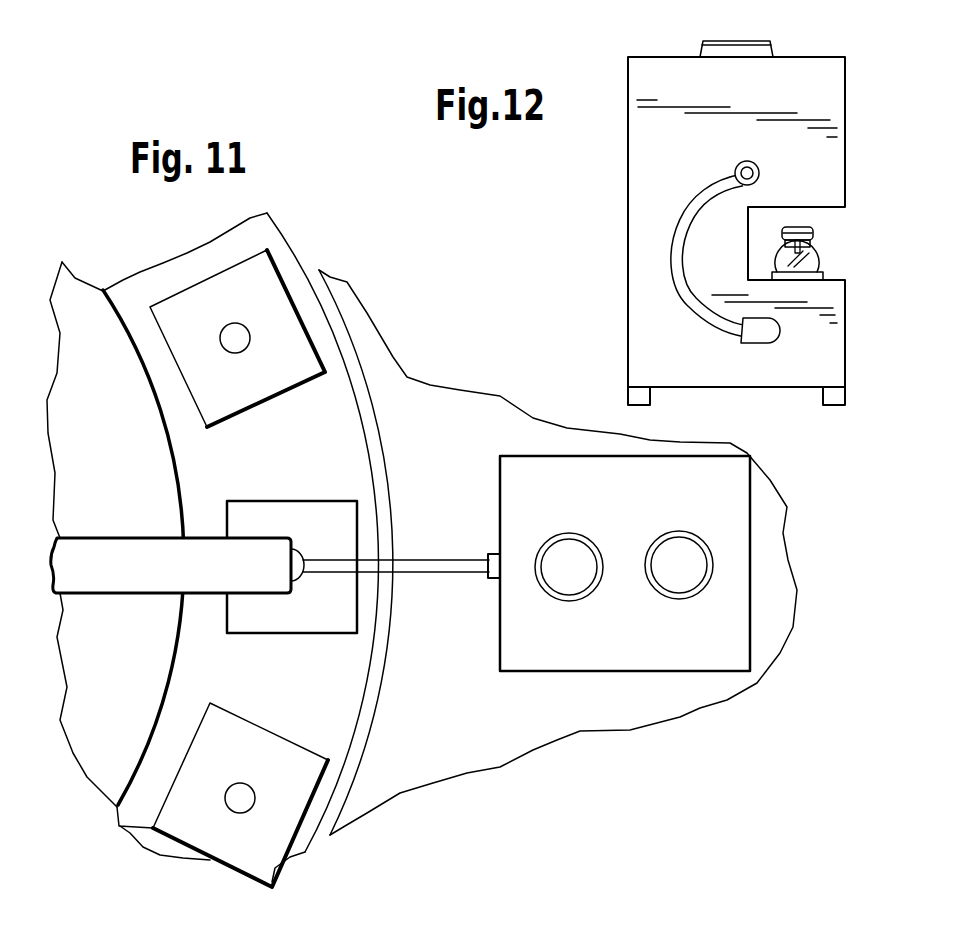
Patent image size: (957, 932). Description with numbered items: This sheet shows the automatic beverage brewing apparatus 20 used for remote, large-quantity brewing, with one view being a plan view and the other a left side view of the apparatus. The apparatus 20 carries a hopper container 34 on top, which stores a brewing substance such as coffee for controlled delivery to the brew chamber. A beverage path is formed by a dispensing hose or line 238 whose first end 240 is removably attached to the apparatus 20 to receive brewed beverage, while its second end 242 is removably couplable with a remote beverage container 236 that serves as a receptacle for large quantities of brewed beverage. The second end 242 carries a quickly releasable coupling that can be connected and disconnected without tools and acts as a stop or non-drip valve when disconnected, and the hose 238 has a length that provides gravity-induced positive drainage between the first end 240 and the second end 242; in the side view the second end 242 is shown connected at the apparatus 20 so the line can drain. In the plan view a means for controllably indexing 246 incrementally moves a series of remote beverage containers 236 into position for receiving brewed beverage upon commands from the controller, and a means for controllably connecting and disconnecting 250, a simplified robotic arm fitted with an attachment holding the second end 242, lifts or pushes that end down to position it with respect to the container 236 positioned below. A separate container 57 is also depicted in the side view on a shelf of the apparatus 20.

In FIG. 11, the automatic beverage brewing apparatus 20 is at (722, 700).
In FIG. 12, the automatic beverage brewing apparatus 20 is at (612, 67).
In FIG. 11, the hopper container 34 is at (547, 534).
In FIG. 12, the hopper container 34 is at (700, 56).
In FIG. 12, the cleaning solution container 57 is at (820, 256).
In FIG. 11, the remote beverage container 236 is at (306, 268).
In FIG. 11, the dispensing hose or line 238 is at (465, 574).
In FIG. 12, the dispensing hose or line 238 is at (670, 250).
In FIG. 11, the first end 240 is at (493, 553).
In FIG. 12, the first end 240 is at (740, 167).
In FIG. 11, the second end 242 is at (297, 550).
In FIG. 12, the second end 242 is at (772, 345).
In FIG. 11, the means for controllably indexing 246 is at (290, 256).
In FIG. 11, the means for controllably connecting and disconnecting 250 is at (146, 538).